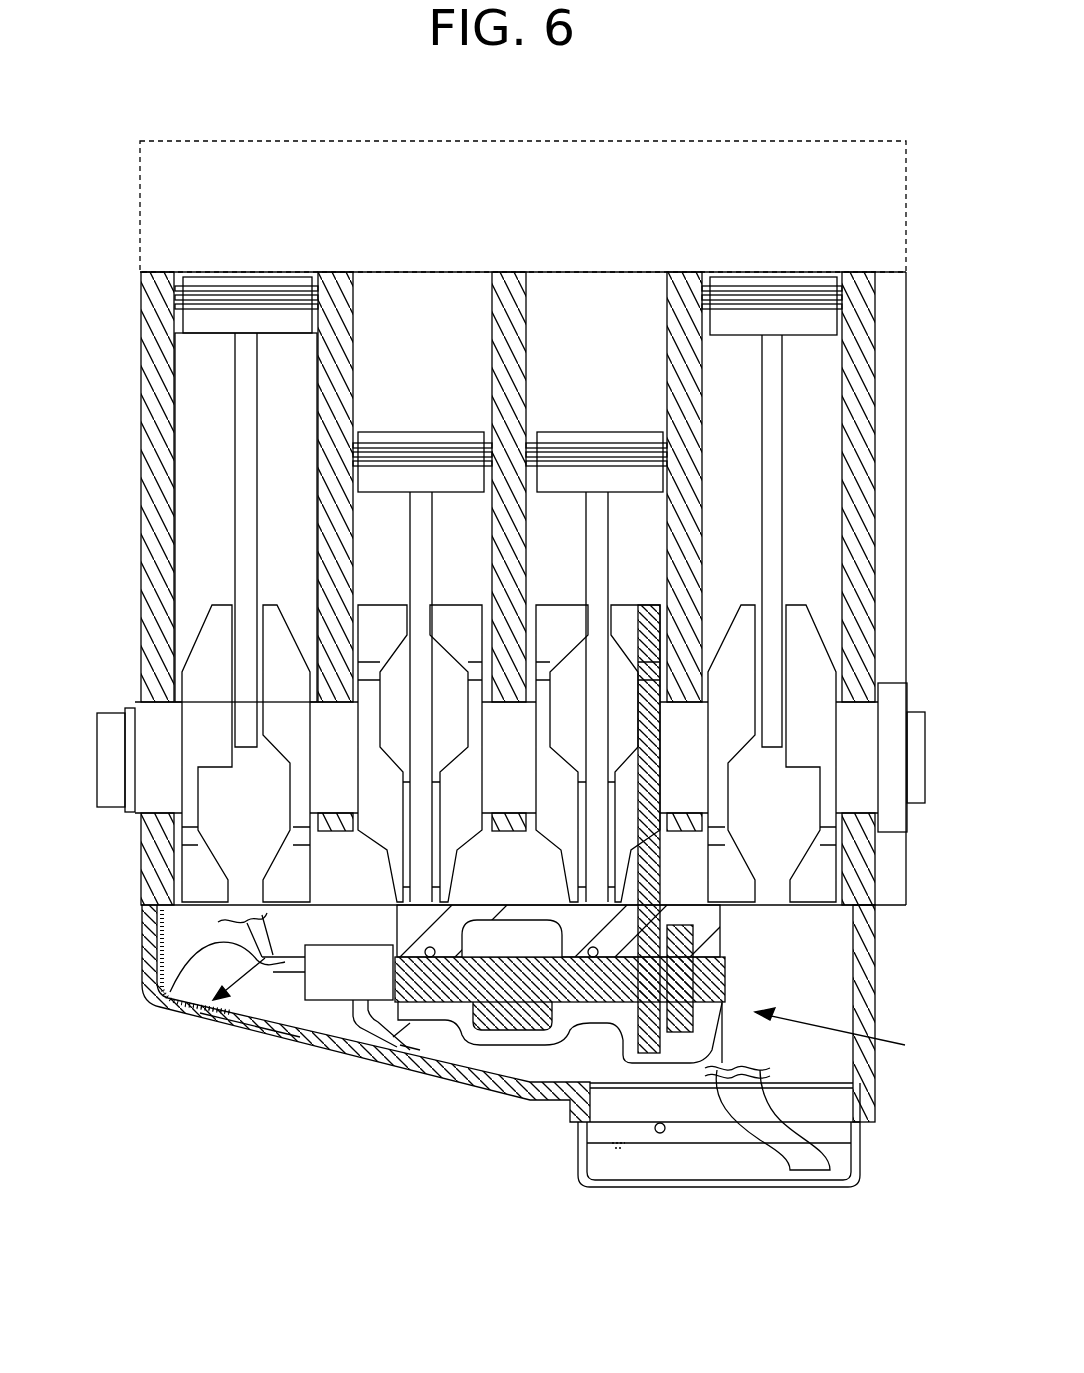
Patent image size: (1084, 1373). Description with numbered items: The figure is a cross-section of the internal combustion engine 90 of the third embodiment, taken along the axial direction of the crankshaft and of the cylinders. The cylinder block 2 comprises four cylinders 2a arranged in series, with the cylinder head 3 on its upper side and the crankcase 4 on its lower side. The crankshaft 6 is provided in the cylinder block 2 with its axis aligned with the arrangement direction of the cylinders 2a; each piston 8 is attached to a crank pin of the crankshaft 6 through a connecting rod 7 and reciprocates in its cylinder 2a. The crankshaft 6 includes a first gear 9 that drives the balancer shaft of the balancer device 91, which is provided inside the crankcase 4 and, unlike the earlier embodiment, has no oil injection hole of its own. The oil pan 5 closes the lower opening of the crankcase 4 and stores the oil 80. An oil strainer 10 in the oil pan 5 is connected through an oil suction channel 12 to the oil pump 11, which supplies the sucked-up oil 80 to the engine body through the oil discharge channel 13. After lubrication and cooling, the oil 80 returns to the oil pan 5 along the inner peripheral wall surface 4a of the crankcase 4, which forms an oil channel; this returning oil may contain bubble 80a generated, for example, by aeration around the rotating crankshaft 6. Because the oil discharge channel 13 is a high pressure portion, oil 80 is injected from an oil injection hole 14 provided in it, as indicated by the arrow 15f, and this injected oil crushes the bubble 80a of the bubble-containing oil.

The cylinder block 2 is at (142, 462).
The cylinder 2a is at (160, 410).
The cylinder head 3 is at (140, 210).
The crankcase 4 is at (142, 950).
The inner peripheral wall surface 4a is at (416, 1040).
The oil pan 5 is at (862, 1160).
The crankshaft 6 is at (132, 705).
The connecting rod 7 is at (235, 507).
The piston 8 is at (186, 346).
The first gear 9 is at (652, 603).
The oil strainer 10 is at (860, 1112).
The oil pump 11 is at (312, 1003).
The oil suction channel 12 is at (345, 1025).
The oil discharge channel 13 is at (152, 978).
The oil injection hole 14 is at (157, 992).
The arrow 15f is at (263, 1027).
The oil 80 is at (152, 913).
The bubble 80a is at (200, 1010).
The internal combustion engine 90 is at (910, 1230).
The balancer device 91 is at (849, 1034).